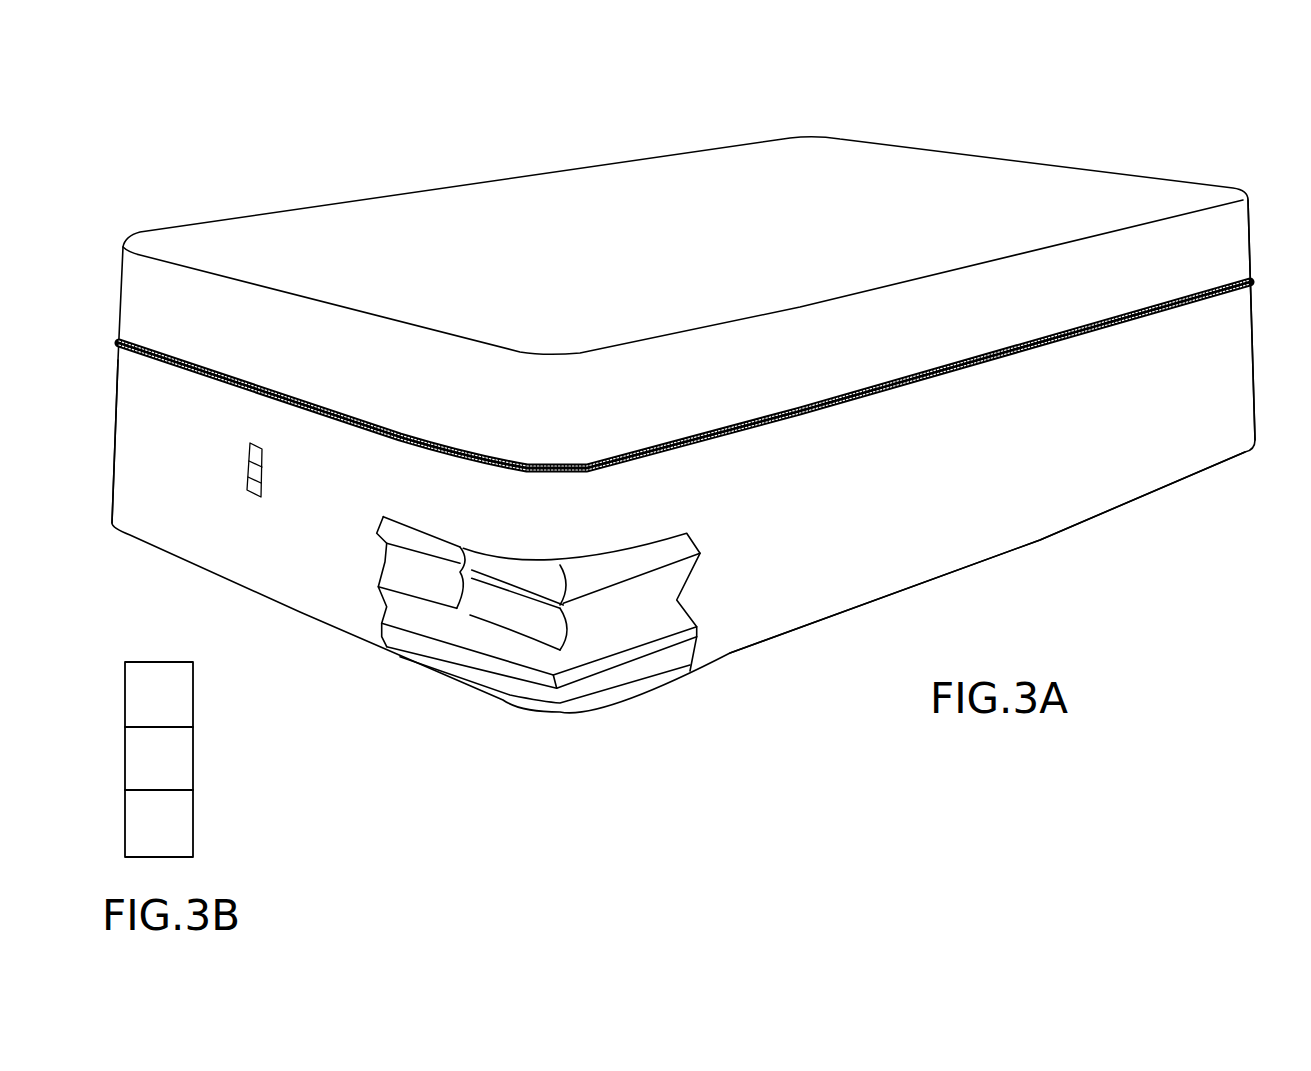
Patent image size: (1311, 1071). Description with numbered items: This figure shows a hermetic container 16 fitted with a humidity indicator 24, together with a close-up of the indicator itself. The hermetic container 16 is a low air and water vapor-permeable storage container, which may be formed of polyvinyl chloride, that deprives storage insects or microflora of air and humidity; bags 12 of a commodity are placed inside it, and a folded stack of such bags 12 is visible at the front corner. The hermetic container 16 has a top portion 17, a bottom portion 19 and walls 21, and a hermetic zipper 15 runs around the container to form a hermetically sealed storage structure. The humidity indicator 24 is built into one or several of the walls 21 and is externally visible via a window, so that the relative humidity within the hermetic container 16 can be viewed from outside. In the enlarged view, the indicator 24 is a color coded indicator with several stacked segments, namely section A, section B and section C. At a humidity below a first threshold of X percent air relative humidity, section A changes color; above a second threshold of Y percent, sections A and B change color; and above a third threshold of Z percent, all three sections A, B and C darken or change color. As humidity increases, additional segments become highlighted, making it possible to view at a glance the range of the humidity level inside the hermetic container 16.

In FIG. 3A, the bags 12 is at (498, 610).
In FIG. 3A, the hermetic zipper 15 is at (224, 366).
In FIG. 3A, the hermetic container 16 is at (1065, 107).
In FIG. 3A, the top portion 17 is at (853, 167).
In FIG. 3A, the bottom portion 19 is at (1077, 520).
In FIG. 3A, the walls 21 is at (117, 442).
In FIG. 3A, the humidity indicator 24 is at (247, 467).
In FIG. 3B, the humidity indicator 24 is at (182, 766).
In FIG. 3B, the section A is at (125, 826).
In FIG. 3B, the section B is at (125, 762).
In FIG. 3B, the section C is at (125, 699).